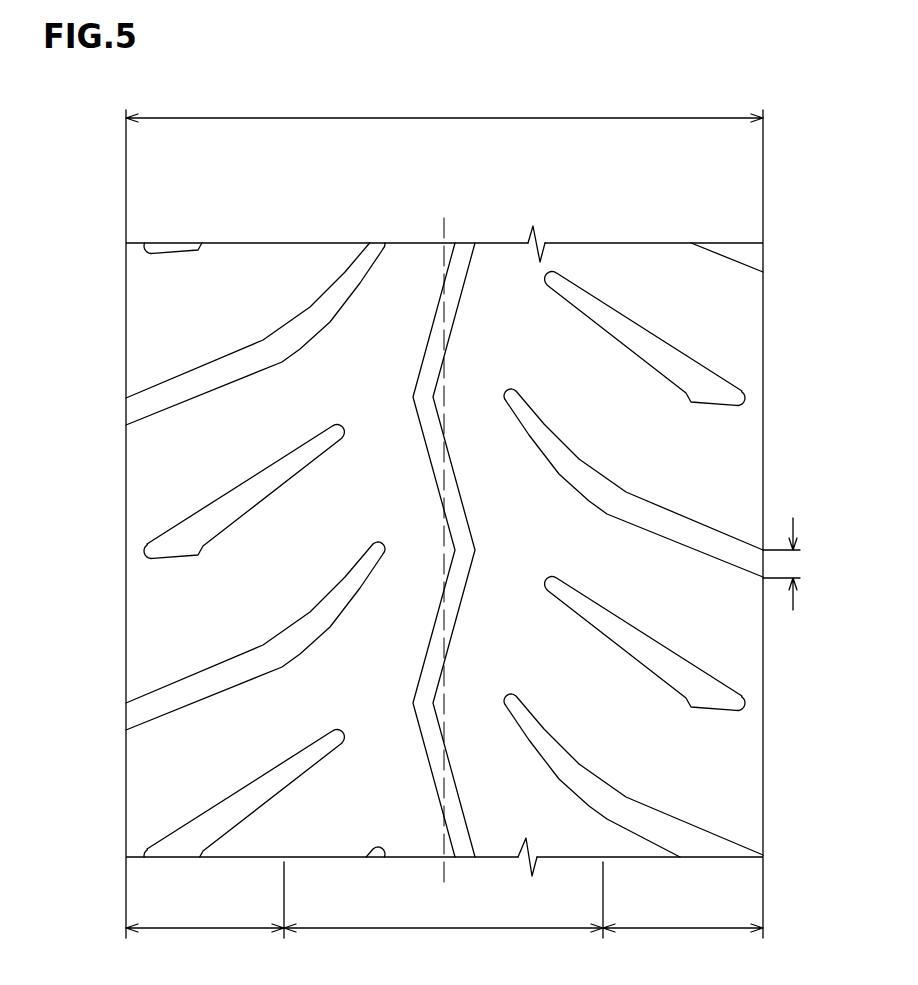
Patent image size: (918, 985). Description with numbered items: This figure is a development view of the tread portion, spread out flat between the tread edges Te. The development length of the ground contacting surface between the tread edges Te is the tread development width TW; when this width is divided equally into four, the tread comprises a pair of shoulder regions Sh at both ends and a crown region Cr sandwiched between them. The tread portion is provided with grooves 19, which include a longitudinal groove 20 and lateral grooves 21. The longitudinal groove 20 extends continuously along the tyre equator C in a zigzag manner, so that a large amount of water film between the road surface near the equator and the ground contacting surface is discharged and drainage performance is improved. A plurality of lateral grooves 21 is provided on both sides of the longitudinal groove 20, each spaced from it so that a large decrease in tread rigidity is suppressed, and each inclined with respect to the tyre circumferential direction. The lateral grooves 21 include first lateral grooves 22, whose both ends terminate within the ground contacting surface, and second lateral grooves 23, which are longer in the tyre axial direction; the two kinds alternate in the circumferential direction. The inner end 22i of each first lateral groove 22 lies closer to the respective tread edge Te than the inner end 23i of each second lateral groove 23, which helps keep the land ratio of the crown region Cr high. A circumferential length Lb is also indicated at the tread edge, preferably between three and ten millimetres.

The grooves 19 is at (686, 501).
The longitudinal groove 20 is at (460, 255).
The lateral grooves 21 is at (435, 295).
The first lateral grooves 22 is at (593, 313).
The second lateral grooves 23 is at (332, 295).
The inner end of first lateral groove 22i is at (344, 426).
The inner end of second lateral groove 23i is at (382, 545).
The tread development width TW is at (444, 105).
The tread edges Te is at (763, 303).
The tyre equator C is at (443, 537).
The length in the tyre circumferential direction Lb is at (797, 564).
The shoulder regions Sh is at (444, 912).
The crown region Cr is at (443, 945).